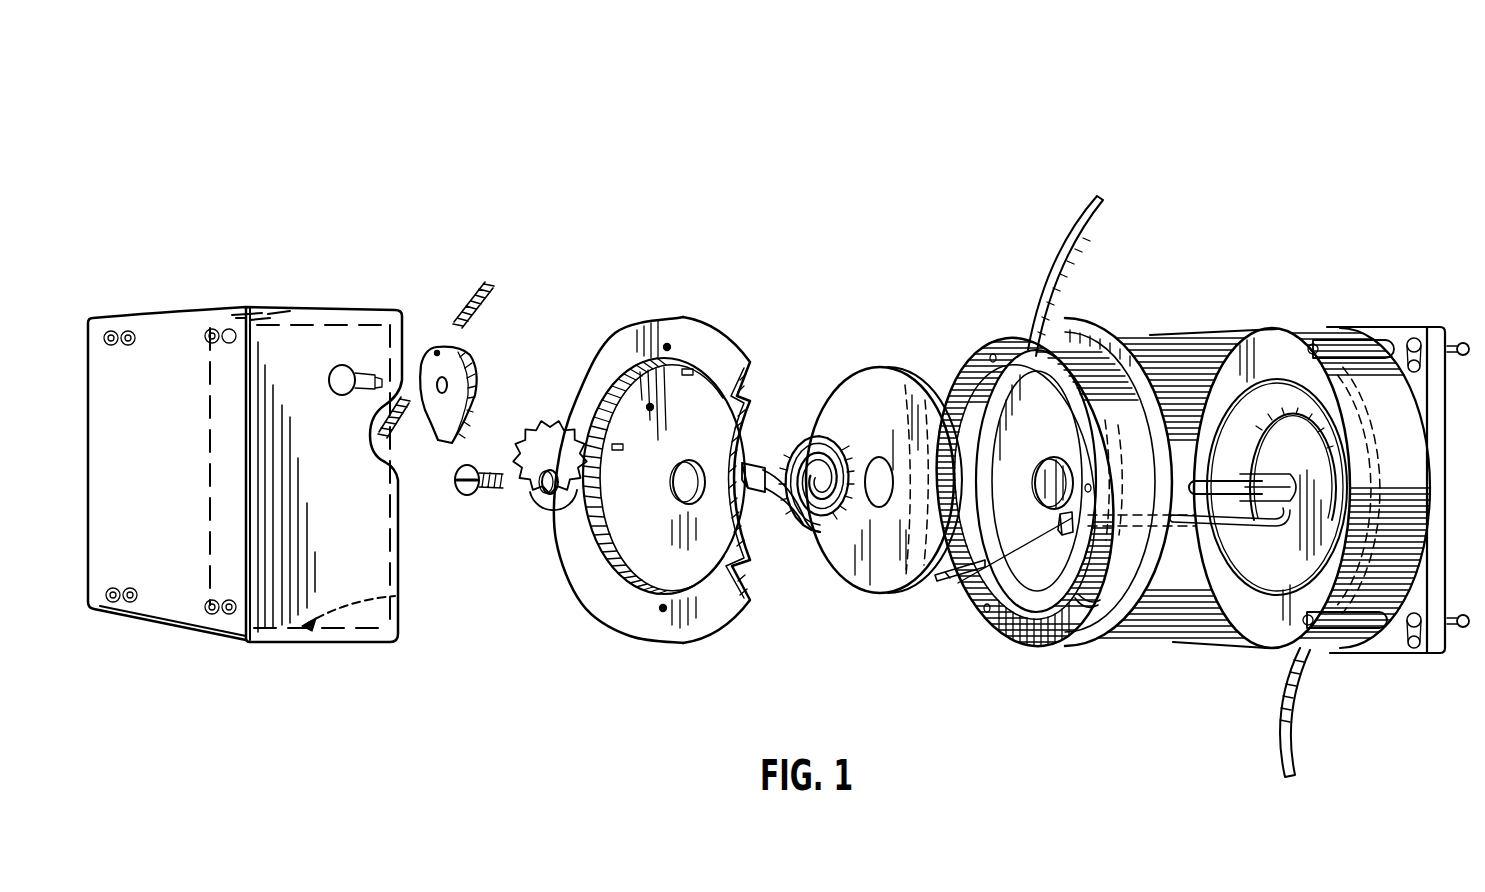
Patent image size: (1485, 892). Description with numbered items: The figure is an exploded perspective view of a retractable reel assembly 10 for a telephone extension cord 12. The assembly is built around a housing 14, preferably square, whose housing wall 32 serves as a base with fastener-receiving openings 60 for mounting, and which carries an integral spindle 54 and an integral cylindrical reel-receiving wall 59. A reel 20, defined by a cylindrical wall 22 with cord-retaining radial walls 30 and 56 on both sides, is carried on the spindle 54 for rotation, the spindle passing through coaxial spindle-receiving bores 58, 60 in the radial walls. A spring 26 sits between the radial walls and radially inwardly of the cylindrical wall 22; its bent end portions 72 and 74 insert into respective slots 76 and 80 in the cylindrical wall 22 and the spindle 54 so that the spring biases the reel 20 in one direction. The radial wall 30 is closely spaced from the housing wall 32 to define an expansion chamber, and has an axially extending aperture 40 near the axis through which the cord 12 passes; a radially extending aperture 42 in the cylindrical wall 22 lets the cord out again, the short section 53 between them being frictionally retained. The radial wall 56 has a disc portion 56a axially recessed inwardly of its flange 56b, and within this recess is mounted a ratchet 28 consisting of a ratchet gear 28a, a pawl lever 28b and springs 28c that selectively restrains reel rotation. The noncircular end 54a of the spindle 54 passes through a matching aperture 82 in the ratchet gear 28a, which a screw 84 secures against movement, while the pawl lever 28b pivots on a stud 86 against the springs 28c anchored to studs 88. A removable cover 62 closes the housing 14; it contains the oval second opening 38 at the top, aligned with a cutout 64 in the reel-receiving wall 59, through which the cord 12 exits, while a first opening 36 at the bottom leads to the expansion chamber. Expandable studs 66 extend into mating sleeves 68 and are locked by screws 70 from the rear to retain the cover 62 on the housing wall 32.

The retractable reel assembly 10 is at (813, 322).
The telephone extension cord 12 is at (1027, 512).
The housing 14 is at (1418, 622).
The reel 20 is at (1115, 449).
The cylindrical wall 22 is at (1122, 352).
The spring 26 is at (845, 432).
The ratchet 28 is at (484, 377).
The ratchet gear 28a is at (543, 437).
The pawl lever 28b is at (452, 378).
The spring 28c is at (458, 292).
The cord-retaining radial wall 30 is at (1062, 655).
The housing wall 32 is at (1192, 334).
The first opening 36 is at (396, 597).
The second opening 38 is at (295, 302).
The axially extending aperture 40 is at (1054, 457).
The radially extending aperture 42 is at (1118, 620).
The short section 53 is at (968, 600).
The spindle 54 is at (1243, 474).
The end of the spindle 54a is at (1204, 542).
The radial wall 56 is at (621, 326).
The disc portion 56a is at (630, 530).
The flange 56b is at (735, 338).
The spindle-receiving bore 58 is at (978, 410).
The cylindrical reel-receiving wall 59 is at (1203, 645).
The spindle-receiving bore 60 is at (688, 462).
The removable cover 62 is at (170, 328).
The cutout 64 is at (1235, 360).
The expandable studs 66 is at (1360, 340).
The sleeves 68 is at (228, 628).
The screws 70 is at (1458, 342).
The bent end portion 72 is at (750, 490).
The bent end portion 74 is at (798, 445).
The slot 76 is at (965, 556).
The slot 80 is at (1276, 478).
The aperture 82 is at (548, 494).
The screw 84 is at (465, 496).
The stud 86 is at (358, 365).
The studs 88 is at (690, 368).